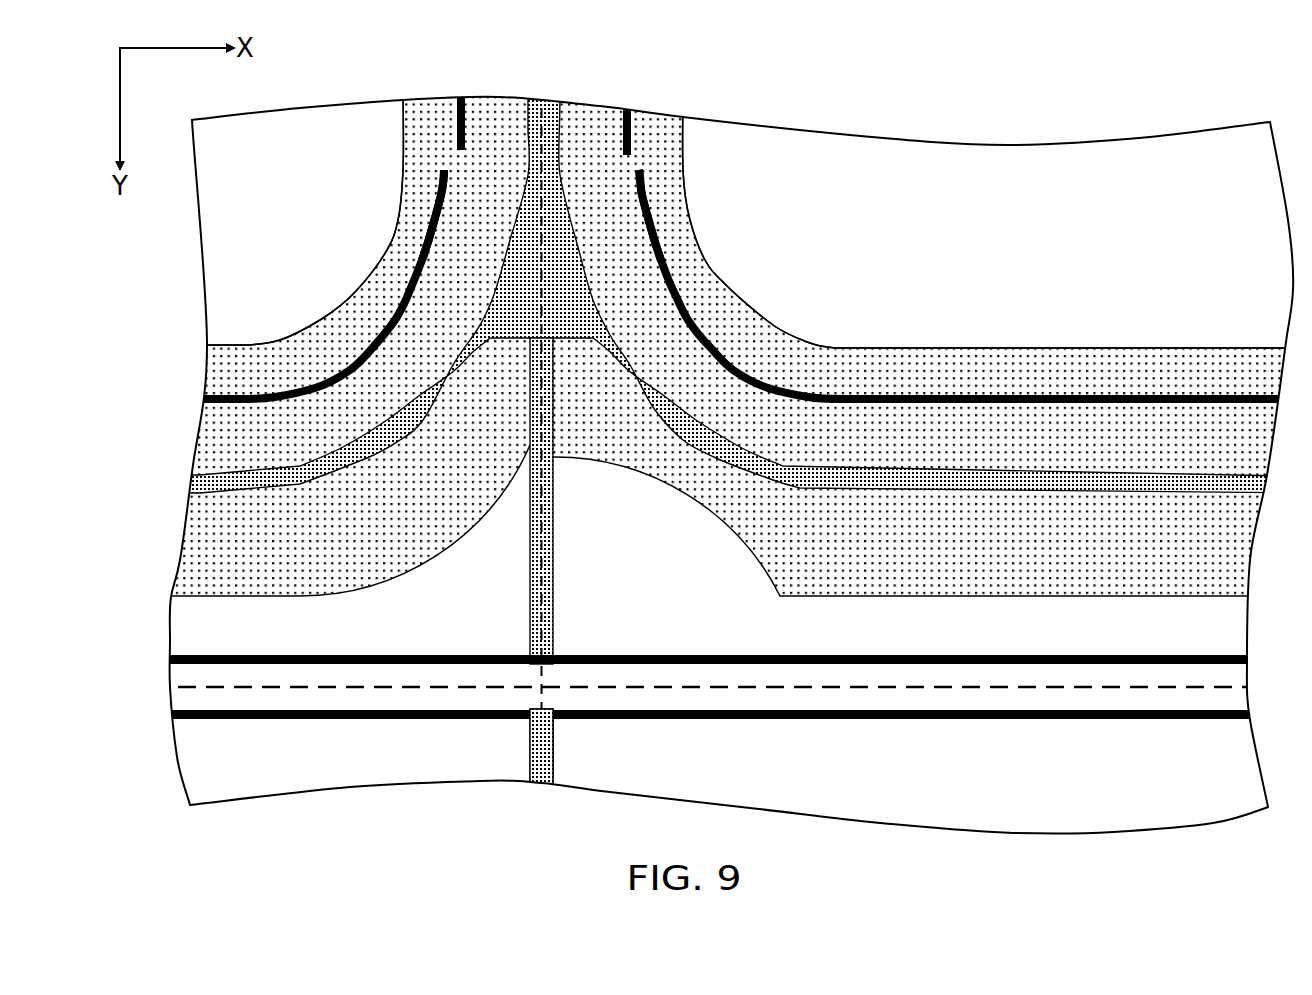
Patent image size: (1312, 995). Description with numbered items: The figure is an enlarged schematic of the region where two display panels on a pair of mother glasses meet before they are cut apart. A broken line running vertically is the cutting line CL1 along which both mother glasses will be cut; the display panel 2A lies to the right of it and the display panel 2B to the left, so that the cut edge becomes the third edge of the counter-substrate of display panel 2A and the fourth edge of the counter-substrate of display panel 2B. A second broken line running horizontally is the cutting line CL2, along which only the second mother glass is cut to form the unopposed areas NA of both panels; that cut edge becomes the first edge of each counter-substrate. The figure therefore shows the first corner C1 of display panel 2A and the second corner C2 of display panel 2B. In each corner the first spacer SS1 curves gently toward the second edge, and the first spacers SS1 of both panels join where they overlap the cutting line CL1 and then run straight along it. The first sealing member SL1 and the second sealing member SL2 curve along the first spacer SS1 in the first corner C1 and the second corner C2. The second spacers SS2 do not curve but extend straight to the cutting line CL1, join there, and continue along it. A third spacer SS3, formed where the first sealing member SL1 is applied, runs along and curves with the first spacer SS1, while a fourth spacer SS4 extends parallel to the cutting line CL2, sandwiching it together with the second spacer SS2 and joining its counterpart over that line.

The display panel 2A is at (1267, 92).
The display panel 2B is at (190, 92).
The first corner C1 is at (889, 220).
The second corner C2 is at (258, 196).
The first sealing member SL1 is at (343, 310).
The second sealing member SL2 is at (330, 597).
The first spacer SS1 is at (207, 490).
The second spacer SS2 is at (200, 655).
The third spacer SS3 is at (457, 145).
The fourth spacer SS4 is at (197, 719).
The cutting line CL1 is at (541, 270).
The cutting line CL2 is at (322, 690).
The unopposed area NA is at (596, 772).